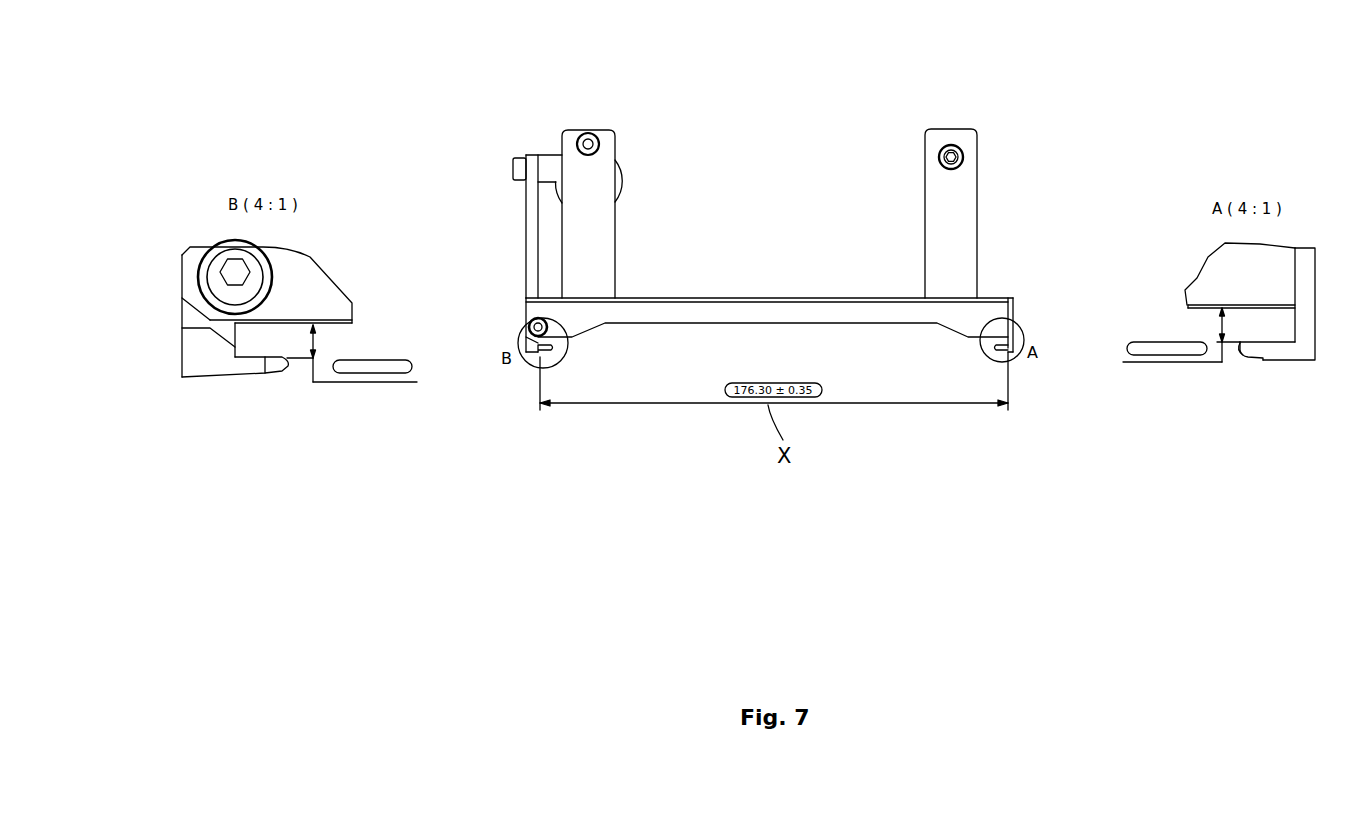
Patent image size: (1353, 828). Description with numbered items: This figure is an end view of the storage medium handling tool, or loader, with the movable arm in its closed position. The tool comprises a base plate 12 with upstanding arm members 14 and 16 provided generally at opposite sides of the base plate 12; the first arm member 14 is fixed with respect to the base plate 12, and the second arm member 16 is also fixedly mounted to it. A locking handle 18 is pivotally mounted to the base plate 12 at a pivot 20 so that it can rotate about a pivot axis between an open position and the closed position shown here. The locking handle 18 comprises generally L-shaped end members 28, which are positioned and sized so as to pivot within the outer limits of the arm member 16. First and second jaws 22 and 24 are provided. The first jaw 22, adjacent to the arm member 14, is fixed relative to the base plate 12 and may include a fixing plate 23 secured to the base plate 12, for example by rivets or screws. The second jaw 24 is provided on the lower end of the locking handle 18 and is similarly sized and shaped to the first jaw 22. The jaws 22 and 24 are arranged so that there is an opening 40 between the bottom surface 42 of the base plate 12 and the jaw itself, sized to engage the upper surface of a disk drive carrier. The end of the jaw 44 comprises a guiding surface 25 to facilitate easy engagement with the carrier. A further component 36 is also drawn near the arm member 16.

The base plate 12 is at (787, 310).
The arm member 14 is at (960, 227).
The arm member 16 is at (597, 250).
The locking handle 18 is at (528, 220).
The pivot 20 is at (527, 317).
The first jaw 22 is at (1002, 350).
The fixing plate 23 is at (1013, 310).
The second jaw 24 is at (538, 352).
The guiding surface 25 is at (303, 342).
The end member 28 is at (519, 138).
The roller 36 is at (623, 180).
The opening 40 is at (1222, 322).
The bottom surface 42 is at (1188, 307).
The end of the jaw 44 is at (1243, 337).